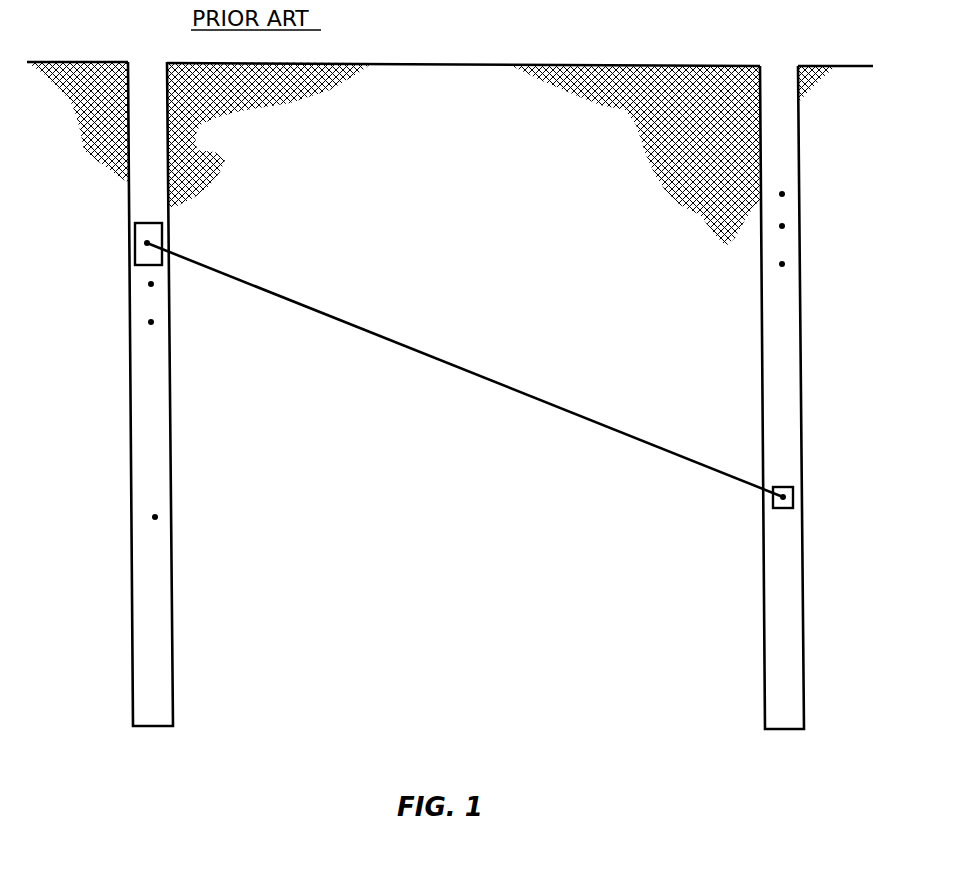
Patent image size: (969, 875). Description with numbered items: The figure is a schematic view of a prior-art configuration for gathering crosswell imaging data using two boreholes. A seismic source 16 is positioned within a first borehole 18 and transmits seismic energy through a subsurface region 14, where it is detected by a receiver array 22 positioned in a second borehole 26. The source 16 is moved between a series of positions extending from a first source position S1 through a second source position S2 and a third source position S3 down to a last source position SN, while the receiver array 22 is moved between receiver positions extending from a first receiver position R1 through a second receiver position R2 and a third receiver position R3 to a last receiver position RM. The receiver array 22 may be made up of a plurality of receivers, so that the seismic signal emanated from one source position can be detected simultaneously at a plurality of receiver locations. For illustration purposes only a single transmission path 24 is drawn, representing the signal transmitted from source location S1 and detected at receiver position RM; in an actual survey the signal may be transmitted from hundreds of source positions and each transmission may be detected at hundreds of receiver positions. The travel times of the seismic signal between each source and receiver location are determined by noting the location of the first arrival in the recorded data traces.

The subsurface region 14 is at (446, 192).
The source 16 is at (147, 223).
The first borehole 18 is at (170, 163).
The receiver array 22 is at (774, 508).
The transmission path 24 is at (418, 351).
The second borehole 26 is at (762, 333).
The first source position S1 is at (147, 243).
The second source position S2 is at (151, 284).
The third source position S3 is at (151, 322).
The last source position SN is at (155, 517).
The first receiver position R1 is at (782, 194).
The second receiver position R2 is at (782, 226).
The third receiver position R3 is at (782, 264).
The last receiver position RM is at (783, 497).